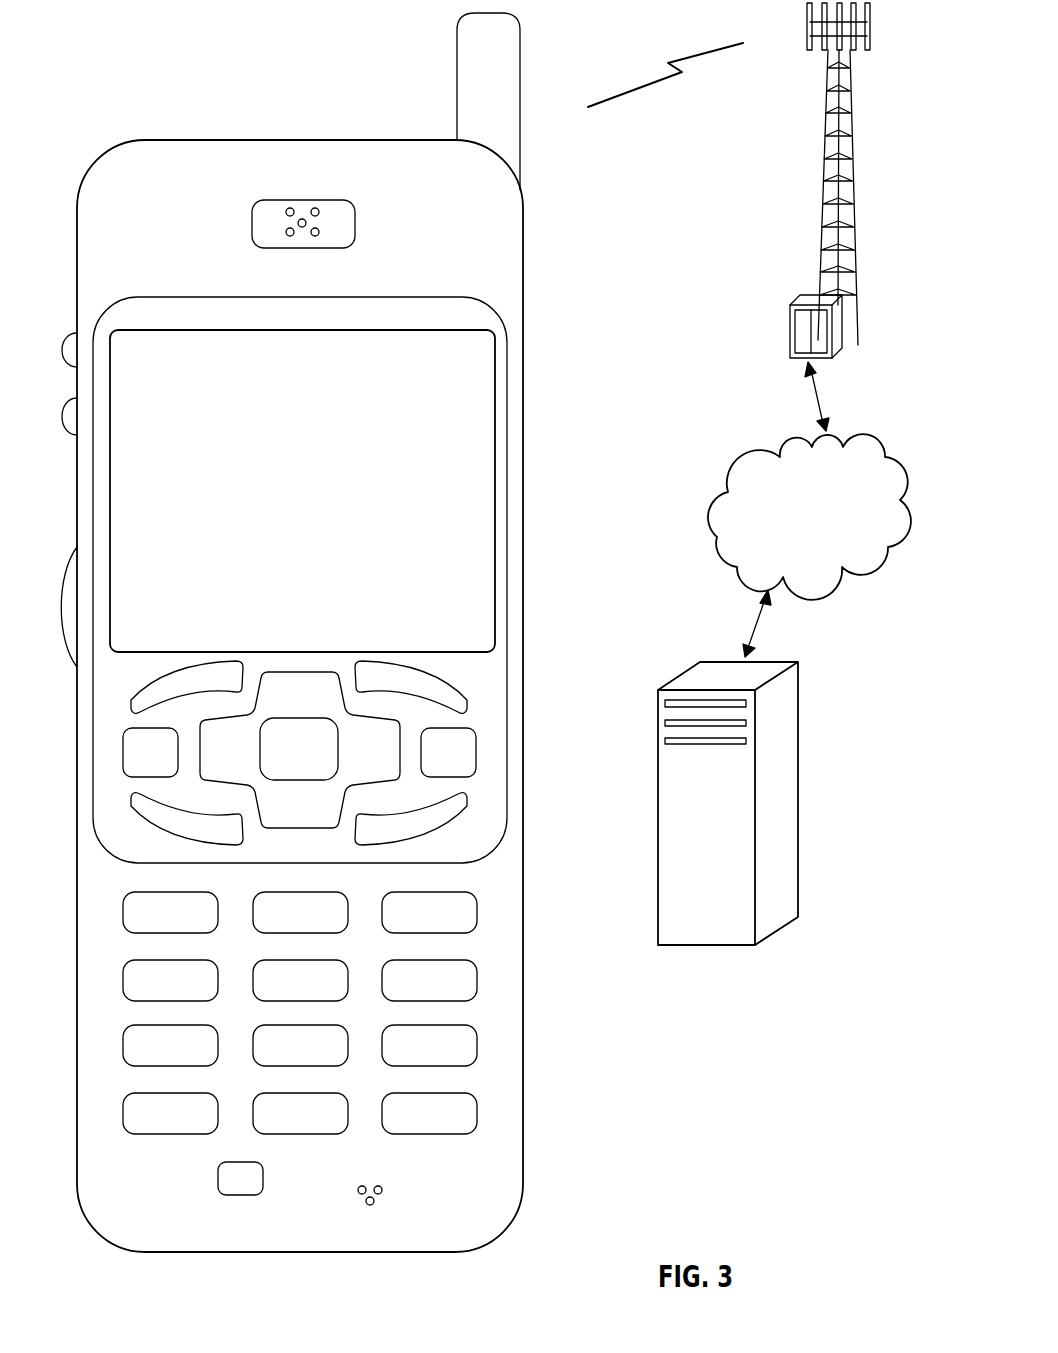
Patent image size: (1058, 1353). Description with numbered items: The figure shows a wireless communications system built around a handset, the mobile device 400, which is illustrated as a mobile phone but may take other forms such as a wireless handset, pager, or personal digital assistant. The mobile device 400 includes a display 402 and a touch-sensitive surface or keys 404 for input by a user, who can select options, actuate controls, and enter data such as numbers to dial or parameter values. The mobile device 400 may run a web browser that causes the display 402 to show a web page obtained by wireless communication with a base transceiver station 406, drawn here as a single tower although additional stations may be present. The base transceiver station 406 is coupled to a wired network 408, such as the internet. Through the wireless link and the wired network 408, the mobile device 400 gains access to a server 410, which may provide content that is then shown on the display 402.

The mobile device 400 is at (134, 1250).
The display 402 is at (496, 342).
The keys 404 is at (536, 1143).
The base transceiver station 406 is at (823, 197).
The wired network 408 is at (727, 566).
The server 410 is at (705, 946).